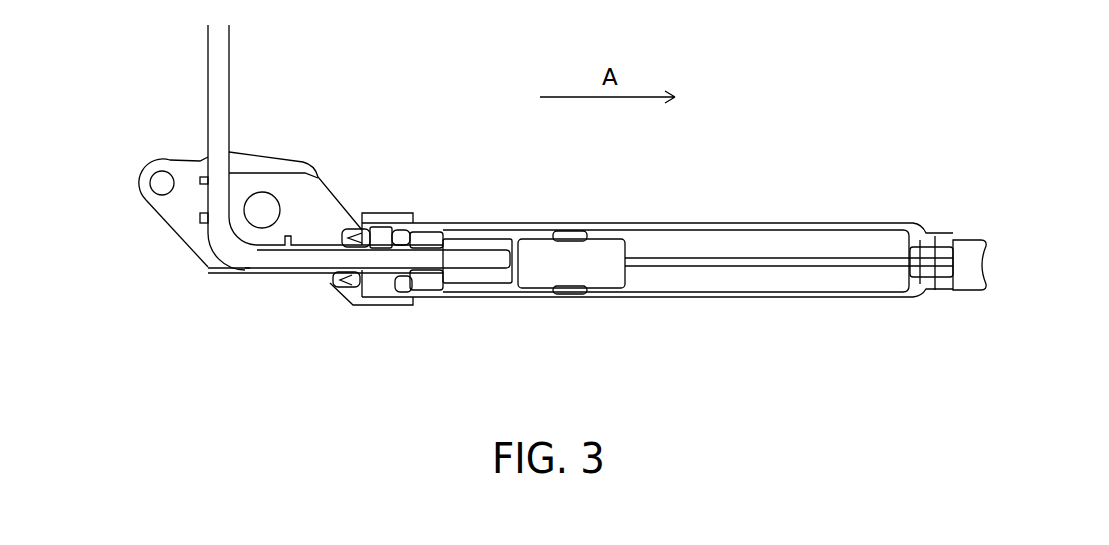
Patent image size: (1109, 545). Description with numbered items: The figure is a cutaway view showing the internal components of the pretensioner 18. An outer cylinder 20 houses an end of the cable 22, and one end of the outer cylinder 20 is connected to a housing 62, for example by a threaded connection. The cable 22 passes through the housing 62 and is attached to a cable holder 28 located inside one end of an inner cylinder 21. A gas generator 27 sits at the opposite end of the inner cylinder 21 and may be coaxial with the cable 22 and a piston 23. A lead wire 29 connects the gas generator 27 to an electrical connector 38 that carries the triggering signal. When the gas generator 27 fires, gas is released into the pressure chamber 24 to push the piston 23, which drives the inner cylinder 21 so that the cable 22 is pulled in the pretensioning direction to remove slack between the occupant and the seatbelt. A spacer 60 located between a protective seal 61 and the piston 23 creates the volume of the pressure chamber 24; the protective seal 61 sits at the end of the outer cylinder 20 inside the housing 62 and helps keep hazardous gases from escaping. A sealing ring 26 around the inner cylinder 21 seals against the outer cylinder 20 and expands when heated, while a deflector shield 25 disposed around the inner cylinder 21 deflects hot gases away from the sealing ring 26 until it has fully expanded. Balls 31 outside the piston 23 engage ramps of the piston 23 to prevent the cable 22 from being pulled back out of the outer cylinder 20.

The pretensioner 18 is at (202, 365).
The outer cylinder 20 is at (697, 222).
The inner cylinder 21 is at (512, 283).
The cable 22 is at (217, 101).
The piston 23 is at (435, 278).
The pressure chamber 24 is at (385, 247).
The deflector shield 25 is at (563, 231).
The sealing ring 26 is at (578, 292).
The gas generator 27 is at (597, 250).
The cable holder 28 is at (489, 245).
The lead wire 29 is at (797, 262).
The balls 31 is at (408, 233).
The electrical connector 38 is at (950, 263).
The spacer 60 is at (380, 243).
The protective seal 61 is at (342, 277).
The housing 62 is at (200, 243).